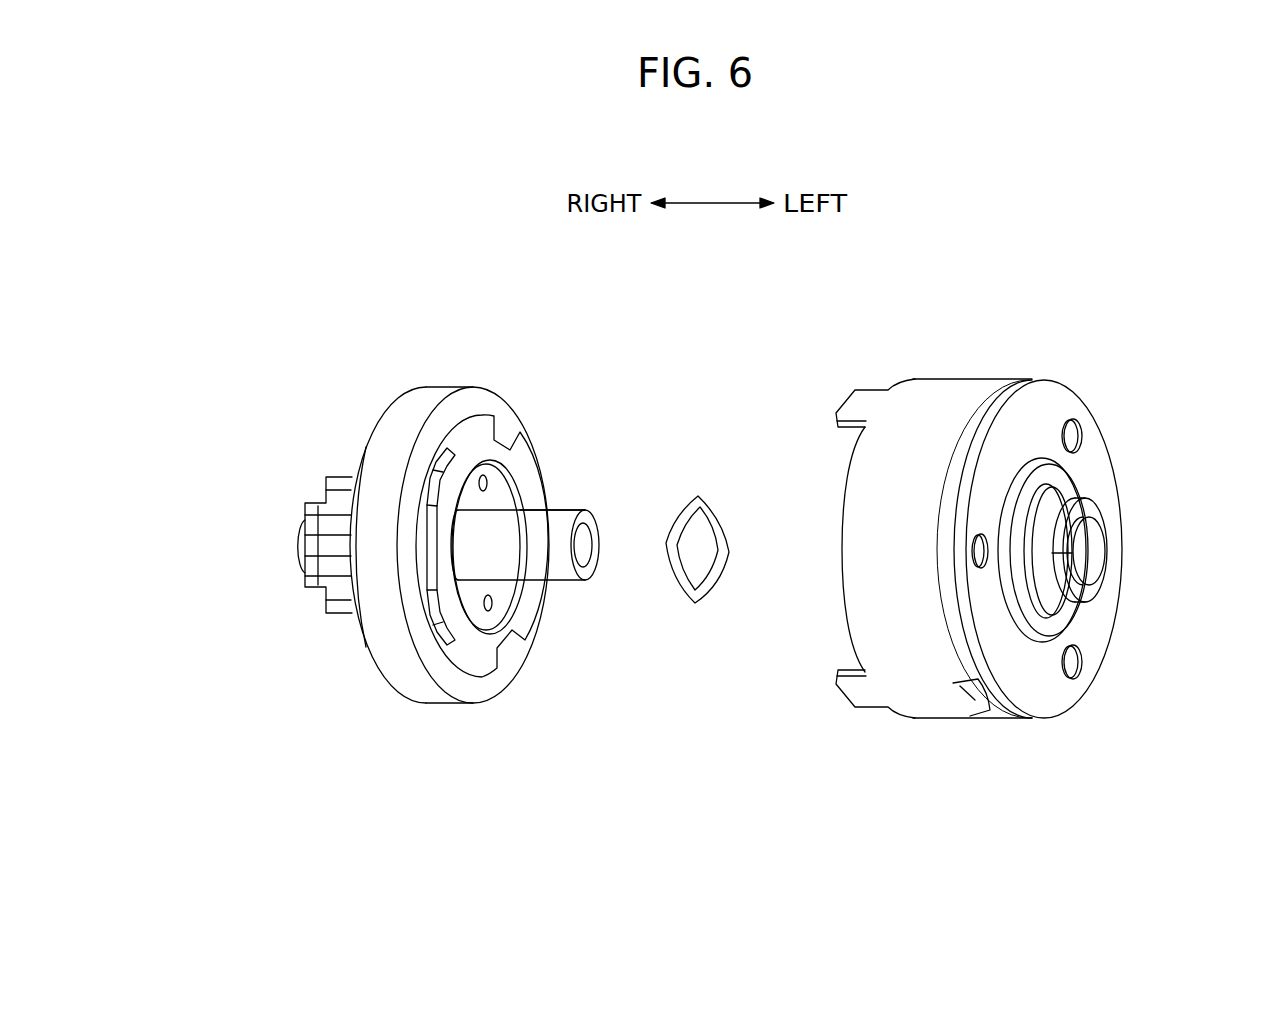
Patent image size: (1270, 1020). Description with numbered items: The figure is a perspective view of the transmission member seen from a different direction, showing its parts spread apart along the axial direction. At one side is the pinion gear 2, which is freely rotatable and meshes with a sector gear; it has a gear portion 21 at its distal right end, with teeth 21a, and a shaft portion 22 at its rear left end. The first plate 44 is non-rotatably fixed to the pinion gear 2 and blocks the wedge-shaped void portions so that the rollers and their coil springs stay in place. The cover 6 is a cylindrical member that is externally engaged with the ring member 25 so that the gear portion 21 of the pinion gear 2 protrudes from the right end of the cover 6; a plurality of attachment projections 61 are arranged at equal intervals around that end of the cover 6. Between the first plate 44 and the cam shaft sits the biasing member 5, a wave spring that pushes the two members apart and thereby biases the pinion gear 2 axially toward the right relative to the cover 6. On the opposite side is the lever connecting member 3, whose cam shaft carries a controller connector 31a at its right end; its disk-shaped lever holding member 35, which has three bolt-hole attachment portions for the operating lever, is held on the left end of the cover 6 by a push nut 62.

The pinion gear 2 is at (557, 521).
The lever connecting member 3 is at (1108, 538).
The biasing member 5 is at (700, 496).
The cover 6 is at (1029, 550).
The gear portion 21 is at (333, 466).
The gear teeth 21a is at (316, 526).
The shaft portion 22 is at (561, 574).
The ring member 25 is at (431, 385).
The controller connector 31a is at (1090, 506).
The lever holding member 35 is at (1048, 699).
The first plate 44 is at (530, 462).
The attachment projections 61 is at (866, 398).
The push nut 62 is at (1045, 460).